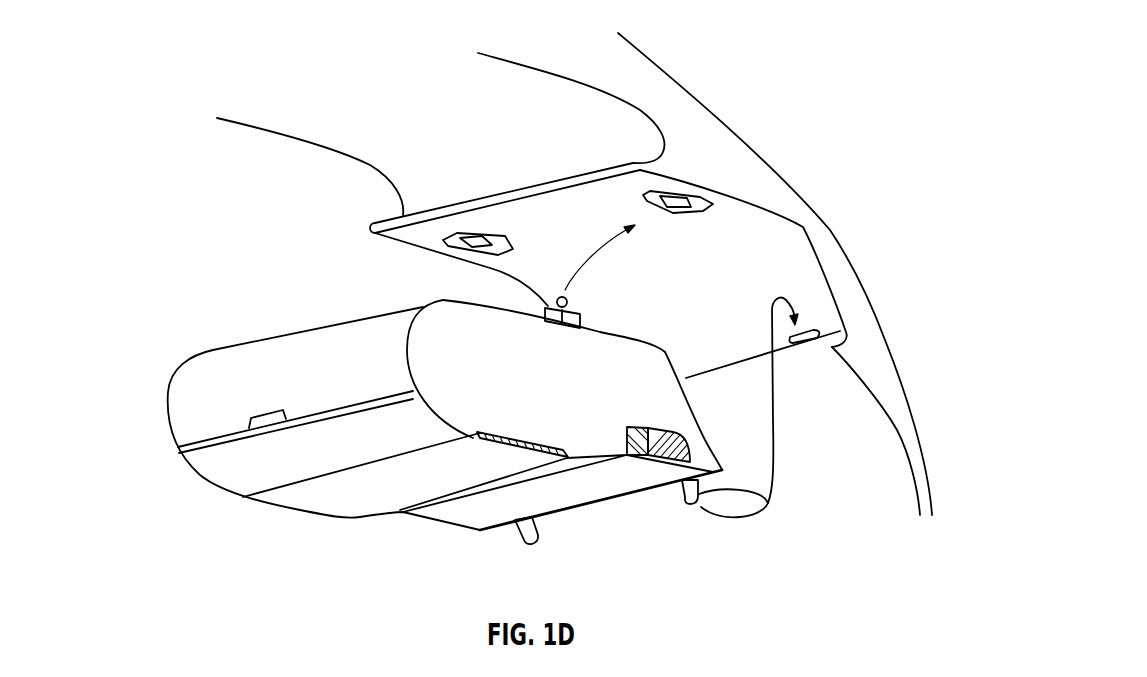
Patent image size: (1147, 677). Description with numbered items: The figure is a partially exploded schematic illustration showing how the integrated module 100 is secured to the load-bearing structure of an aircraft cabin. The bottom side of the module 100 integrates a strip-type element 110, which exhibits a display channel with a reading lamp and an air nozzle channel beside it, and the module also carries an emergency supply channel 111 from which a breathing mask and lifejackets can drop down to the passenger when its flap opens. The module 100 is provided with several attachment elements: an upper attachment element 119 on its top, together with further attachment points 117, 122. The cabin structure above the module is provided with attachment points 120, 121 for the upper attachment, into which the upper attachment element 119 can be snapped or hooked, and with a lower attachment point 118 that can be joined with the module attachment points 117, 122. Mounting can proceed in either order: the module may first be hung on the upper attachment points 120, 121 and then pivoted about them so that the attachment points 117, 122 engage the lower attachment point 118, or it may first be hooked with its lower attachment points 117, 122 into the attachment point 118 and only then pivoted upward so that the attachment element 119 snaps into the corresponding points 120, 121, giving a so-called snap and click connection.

The integrated module 100 is at (229, 284).
The strip-type element 110 is at (348, 495).
The emergency supply channel 111 is at (660, 460).
The lower attachment point 117 is at (768, 503).
The lower attachment point 118 is at (830, 328).
The upper attachment element 119 is at (580, 310).
The attachment point 120 is at (680, 200).
The attachment point 121 is at (475, 242).
The upper attachment point 122 is at (532, 544).